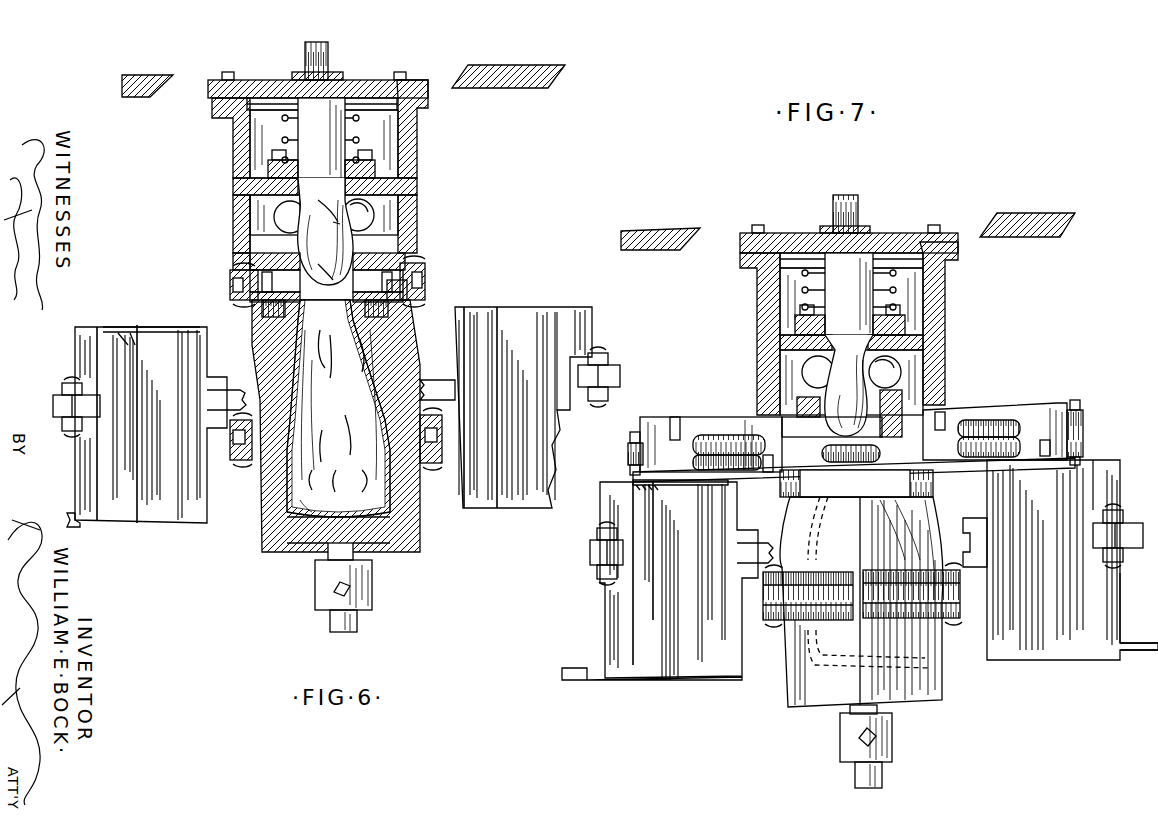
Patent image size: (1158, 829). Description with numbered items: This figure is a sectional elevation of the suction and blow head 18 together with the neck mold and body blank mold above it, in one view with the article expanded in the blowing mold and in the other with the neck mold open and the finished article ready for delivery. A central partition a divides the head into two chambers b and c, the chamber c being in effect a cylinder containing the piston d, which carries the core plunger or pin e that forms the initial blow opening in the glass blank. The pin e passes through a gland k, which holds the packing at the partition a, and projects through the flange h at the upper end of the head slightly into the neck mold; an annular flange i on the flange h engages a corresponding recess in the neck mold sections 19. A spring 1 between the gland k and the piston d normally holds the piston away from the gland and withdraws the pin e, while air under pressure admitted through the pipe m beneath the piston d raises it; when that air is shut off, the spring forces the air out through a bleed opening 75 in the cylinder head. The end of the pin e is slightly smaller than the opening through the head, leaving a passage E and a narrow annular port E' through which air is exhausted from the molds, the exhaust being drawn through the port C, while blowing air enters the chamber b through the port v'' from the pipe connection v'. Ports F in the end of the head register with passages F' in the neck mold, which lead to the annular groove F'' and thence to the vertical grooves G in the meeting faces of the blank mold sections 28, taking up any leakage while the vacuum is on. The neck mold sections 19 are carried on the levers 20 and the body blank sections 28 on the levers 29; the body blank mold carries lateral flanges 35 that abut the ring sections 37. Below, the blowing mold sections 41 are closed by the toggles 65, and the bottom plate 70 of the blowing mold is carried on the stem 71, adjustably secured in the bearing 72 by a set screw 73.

In FIG. 6, the pipe m is at (296, 59).
In FIG. 7, the pipe m is at (854, 196).
In FIG. 6, the bleed opening 75 is at (368, 80).
In FIG. 7, the bleed opening 75 is at (893, 232).
In FIG. 6, the ring sections 37 is at (505, 82).
In FIG. 7, the ring sections 37 is at (640, 236).
In FIG. 6, the piston d is at (254, 102).
In FIG. 7, the piston d is at (764, 267).
In FIG. 6, the spring 1 is at (400, 128).
In FIG. 7, the spring 1 is at (809, 294).
In FIG. 6, the chamber c is at (263, 143).
In FIG. 7, the chamber c is at (905, 293).
In FIG. 6, the gland k is at (370, 166).
In FIG. 7, the gland k is at (802, 327).
In FIG. 6, the central partition a is at (272, 190).
In FIG. 7, the central partition a is at (912, 337).
In FIG. 6, the chamber b is at (386, 196).
In FIG. 7, the chamber b is at (794, 359).
In FIG. 6, the suction and blow head 18 is at (250, 196).
In FIG. 6, the port C is at (282, 221).
In FIG. 7, the port C is at (806, 375).
In FIG. 6, the pipe v' is at (410, 210).
In FIG. 7, the port v'' is at (931, 368).
In FIG. 6, the core plunger or pin e is at (326, 231).
In FIG. 7, the core plunger or pin e is at (849, 385).
In FIG. 6, the annular port E' is at (220, 270).
In FIG. 6, the annular flange i is at (379, 267).
In FIG. 7, the annular flange i is at (798, 422).
In FIG. 6, the ports F is at (364, 258).
In FIG. 6, the flange h is at (260, 282).
In FIG. 7, the flange h is at (962, 400).
In FIG. 6, the passages F' is at (439, 274).
In FIG. 7, the passages F' is at (711, 421).
In FIG. 6, the neck mold sections 19 is at (240, 280).
In FIG. 7, the neck mold sections 19 is at (660, 455).
In FIG. 6, the levers 20 is at (428, 285).
In FIG. 7, the levers 20 is at (1094, 440).
In FIG. 6, the vertical grooves G is at (125, 335).
In FIG. 6, the passage E is at (234, 308).
In FIG. 7, the passage E is at (854, 462).
In FIG. 6, the annular groove F'' is at (429, 299).
In FIG. 7, the annular groove F'' is at (850, 425).
In FIG. 6, the body blank sections 28 is at (88, 363).
In FIG. 7, the body blank sections 28 is at (620, 620).
In FIG. 6, the levers 29 is at (56, 409).
In FIG. 7, the levers 29 is at (590, 561).
In FIG. 6, the lateral flanges 35 is at (86, 525).
In FIG. 7, the lateral flanges 35 is at (578, 686).
In FIG. 6, the toggles 65 is at (240, 450).
In FIG. 7, the toggles 65 is at (813, 602).
In FIG. 6, the blowing mold sections 41 is at (265, 512).
In FIG. 7, the blowing mold sections 41 is at (829, 692).
In FIG. 6, the bearing 72 is at (316, 585).
In FIG. 7, the bearing 72 is at (877, 725).
In FIG. 6, the set screw 73 is at (340, 590).
In FIG. 7, the set screw 73 is at (862, 740).
In FIG. 6, the bottom plate 70 is at (378, 540).
In FIG. 6, the stem 71 is at (332, 633).
In FIG. 7, the stem 71 is at (884, 779).